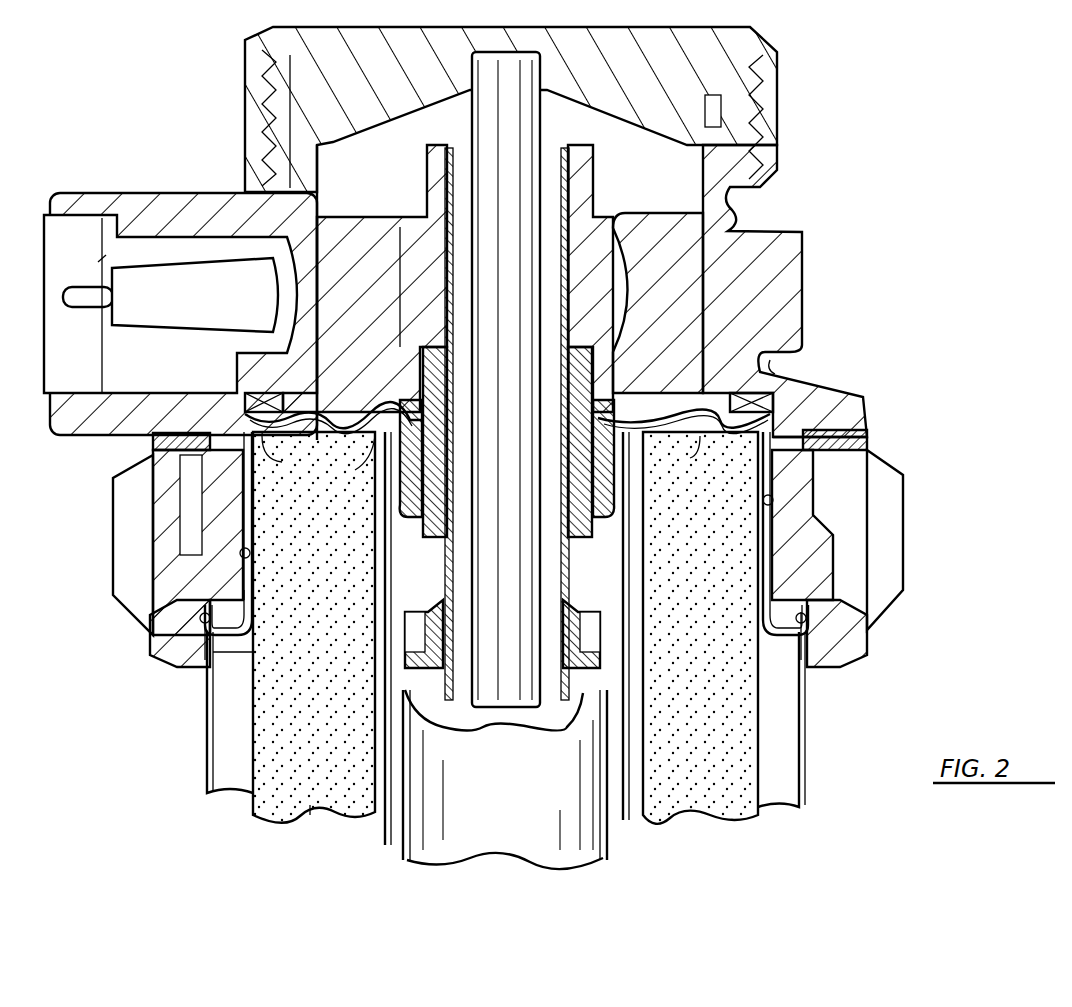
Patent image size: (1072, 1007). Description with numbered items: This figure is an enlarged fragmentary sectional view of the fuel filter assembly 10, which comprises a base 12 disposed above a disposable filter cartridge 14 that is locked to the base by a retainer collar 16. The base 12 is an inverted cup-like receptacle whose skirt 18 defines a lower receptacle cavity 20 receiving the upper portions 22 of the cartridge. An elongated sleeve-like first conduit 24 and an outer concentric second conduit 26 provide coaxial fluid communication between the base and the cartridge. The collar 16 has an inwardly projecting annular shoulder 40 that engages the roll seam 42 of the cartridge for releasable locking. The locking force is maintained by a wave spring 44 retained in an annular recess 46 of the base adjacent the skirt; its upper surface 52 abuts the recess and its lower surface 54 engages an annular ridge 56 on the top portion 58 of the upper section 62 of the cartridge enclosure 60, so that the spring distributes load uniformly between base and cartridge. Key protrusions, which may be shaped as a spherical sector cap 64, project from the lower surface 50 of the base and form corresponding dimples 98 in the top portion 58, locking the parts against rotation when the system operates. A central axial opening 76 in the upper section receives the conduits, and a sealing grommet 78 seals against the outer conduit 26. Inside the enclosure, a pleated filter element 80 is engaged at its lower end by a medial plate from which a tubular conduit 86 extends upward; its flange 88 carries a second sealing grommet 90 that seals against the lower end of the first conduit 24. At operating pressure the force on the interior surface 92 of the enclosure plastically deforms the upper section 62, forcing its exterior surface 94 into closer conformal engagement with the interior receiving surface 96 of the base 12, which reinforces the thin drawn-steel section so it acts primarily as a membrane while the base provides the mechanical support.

The fuel filter assembly 10 is at (886, 164).
The base 12 is at (805, 272).
The disposable filter cartridge 14 is at (808, 731).
The retainer collar 16 is at (892, 488).
The skirt 18 is at (780, 530).
The lower receptacle cavity 20 is at (776, 585).
The upper portions 22 is at (252, 506).
The first conduit 24 is at (575, 720).
The second conduit 26 is at (617, 375).
The annular shoulder 40 is at (828, 645).
The roll seam 42 is at (840, 600).
The spring 44 is at (790, 412).
The annular recess 46 is at (752, 392).
The lower surface 50 is at (740, 435).
The upper surface 52 is at (782, 372).
The lower surface 54 is at (858, 395).
The annular ridge 56 is at (288, 454).
The top portion 58 is at (677, 456).
The filter cartridge enclosure 60 is at (207, 745).
The upper section 62 is at (250, 576).
The spherical sector cap 64 is at (360, 420).
The central axial opening 76 is at (408, 410).
The sealing grommet 78 is at (612, 510).
The filter element 80 is at (312, 818).
The tubular conduit 86 is at (504, 812).
The flange 88 is at (408, 615).
The second sealing grommet 90 is at (432, 650).
The interior surface 92 is at (250, 592).
The exterior surface 94 is at (765, 505).
The interior receiving surface 96 is at (250, 528).
The dimples 98 is at (350, 461).